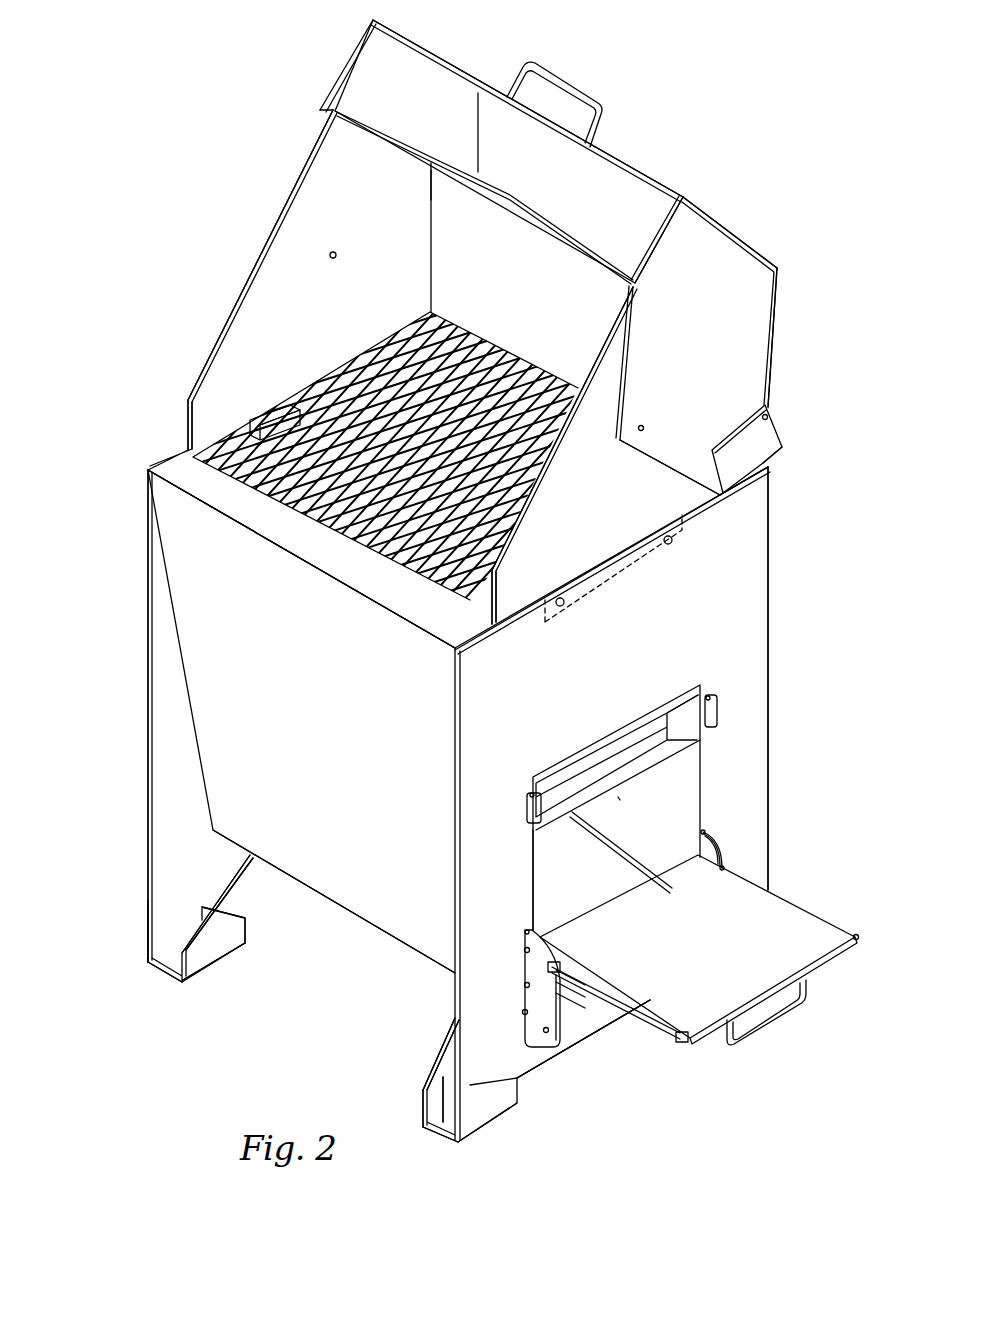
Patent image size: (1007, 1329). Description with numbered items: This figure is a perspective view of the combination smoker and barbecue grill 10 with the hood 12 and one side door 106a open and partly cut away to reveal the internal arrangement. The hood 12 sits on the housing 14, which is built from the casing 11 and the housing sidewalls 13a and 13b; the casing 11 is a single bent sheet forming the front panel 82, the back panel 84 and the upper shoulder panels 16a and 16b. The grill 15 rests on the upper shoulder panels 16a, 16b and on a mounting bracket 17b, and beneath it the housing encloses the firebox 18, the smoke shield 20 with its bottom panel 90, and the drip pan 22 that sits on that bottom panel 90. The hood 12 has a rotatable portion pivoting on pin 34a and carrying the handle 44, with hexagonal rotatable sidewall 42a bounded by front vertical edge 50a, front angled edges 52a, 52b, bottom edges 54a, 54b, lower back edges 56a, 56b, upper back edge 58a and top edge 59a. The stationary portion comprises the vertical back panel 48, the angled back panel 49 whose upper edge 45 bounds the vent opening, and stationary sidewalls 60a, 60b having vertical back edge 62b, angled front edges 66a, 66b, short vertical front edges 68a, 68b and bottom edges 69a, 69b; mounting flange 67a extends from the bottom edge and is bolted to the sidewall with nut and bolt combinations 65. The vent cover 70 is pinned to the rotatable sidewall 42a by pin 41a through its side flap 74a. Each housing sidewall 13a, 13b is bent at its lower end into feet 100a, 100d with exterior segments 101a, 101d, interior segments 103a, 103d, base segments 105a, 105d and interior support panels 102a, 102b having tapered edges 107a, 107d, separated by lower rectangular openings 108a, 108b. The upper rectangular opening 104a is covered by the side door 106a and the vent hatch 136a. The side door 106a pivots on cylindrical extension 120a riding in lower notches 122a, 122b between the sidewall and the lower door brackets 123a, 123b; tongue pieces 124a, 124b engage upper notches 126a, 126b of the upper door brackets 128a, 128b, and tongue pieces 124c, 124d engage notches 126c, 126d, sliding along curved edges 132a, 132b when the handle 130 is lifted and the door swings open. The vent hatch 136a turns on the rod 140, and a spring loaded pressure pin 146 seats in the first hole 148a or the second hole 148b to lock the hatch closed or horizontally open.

The combination smoker and barbecue grill 10 is at (298, 430).
The casing 11 is at (395, 945).
The hood 12 is at (256, 172).
The housing sidewall 13a is at (611, 772).
The housing sidewall 13b is at (172, 716).
The housing 14 is at (142, 714).
The grill 15 is at (250, 480).
The upper shoulder panel 16a is at (300, 530).
The upper shoulder panel 16b is at (770, 470).
The mounting bracket 17b is at (285, 405).
The firebox 18 is at (562, 880).
The smoke shield 20 is at (621, 798).
The drip pan 22 is at (607, 760).
The pin 34a is at (645, 428).
The pin 41a is at (768, 416).
The rotatable sidewall 42a is at (729, 302).
The handle 44 is at (565, 75).
The upper edge of angled back panel 45 is at (478, 190).
The vertical back panel 48 is at (509, 155).
The angled back panel 49 is at (510, 195).
The front vertical edge 50a is at (748, 250).
The front angled edge 52a is at (766, 382).
The front angled edge 52b is at (476, 142).
The horizontal bottom edge 54a is at (650, 250).
The horizontal bottom edge 54b is at (345, 74).
The lower back edge 56a is at (635, 355).
The lower back edge 56b is at (318, 126).
The upper back edge 58a is at (655, 460).
The top edge 59a is at (712, 490).
The stationary sidewall 60a is at (606, 455).
The stationary sidewall 60b is at (243, 290).
The vertical back edge 62b is at (430, 255).
The nut and bolt combination 65 is at (664, 540).
The angled front edge 66a is at (600, 350).
The angled front edge 66b is at (270, 236).
The mounting flange 67a is at (655, 560).
The vertical front edge 68a is at (495, 600).
The vertical front edge 68b is at (186, 428).
The bottom edge 69a is at (680, 520).
The bottom edge 69b is at (252, 425).
The vent cover 70 is at (770, 457).
The side flap 74a is at (747, 449).
The front panel 82 is at (304, 805).
The back panel 84 is at (616, 807).
The bottom panel 90 is at (680, 735).
The foot 100a is at (515, 1122).
The foot 100d is at (193, 998).
The exterior segment 101a is at (480, 1118).
The exterior segment 101d is at (150, 948).
The interior support panel 102a is at (438, 1065).
The interior support panel 102b is at (265, 905).
The interior segment 103a is at (438, 1107).
The interior segment 103d is at (205, 966).
The upper rectangular opening 104a is at (660, 778).
The base segment 105a is at (430, 1128).
The base segment 105d is at (158, 975).
The side door 106a is at (698, 949).
The tapered edge 107a is at (440, 1048).
The tapered edge 107d is at (200, 945).
The lower rectangular opening 108a is at (598, 1045).
The lower rectangular opening 108b is at (255, 935).
The cylindrical extension 120a is at (526, 945).
The lower notch 122a is at (525, 952).
The lower notch 122b is at (718, 850).
The lower door bracket 123a is at (544, 1033).
The lower door bracket 123b is at (720, 860).
The tongue piece 124a is at (678, 1044).
The tongue piece 124b is at (855, 934).
The tongue piece 124c is at (724, 869).
The tongue piece 124d is at (545, 990).
The upper notch 126a is at (530, 792).
The upper notch 126b is at (706, 695).
The upper notch 126c is at (704, 830).
The upper notch 126d is at (527, 928).
The upper door bracket 128a is at (526, 806).
The upper door bracket 128b is at (718, 712).
The handle 130 is at (768, 1030).
The upper curved edge 132a is at (585, 840).
The upper curved edge 132b is at (715, 840).
The vent hatch 136a is at (590, 973).
The cylindrical rod 140 is at (523, 1011).
The spring loaded pressure pin 146 is at (570, 985).
The first hole 148a is at (525, 985).
The second hole 148b is at (545, 1040).